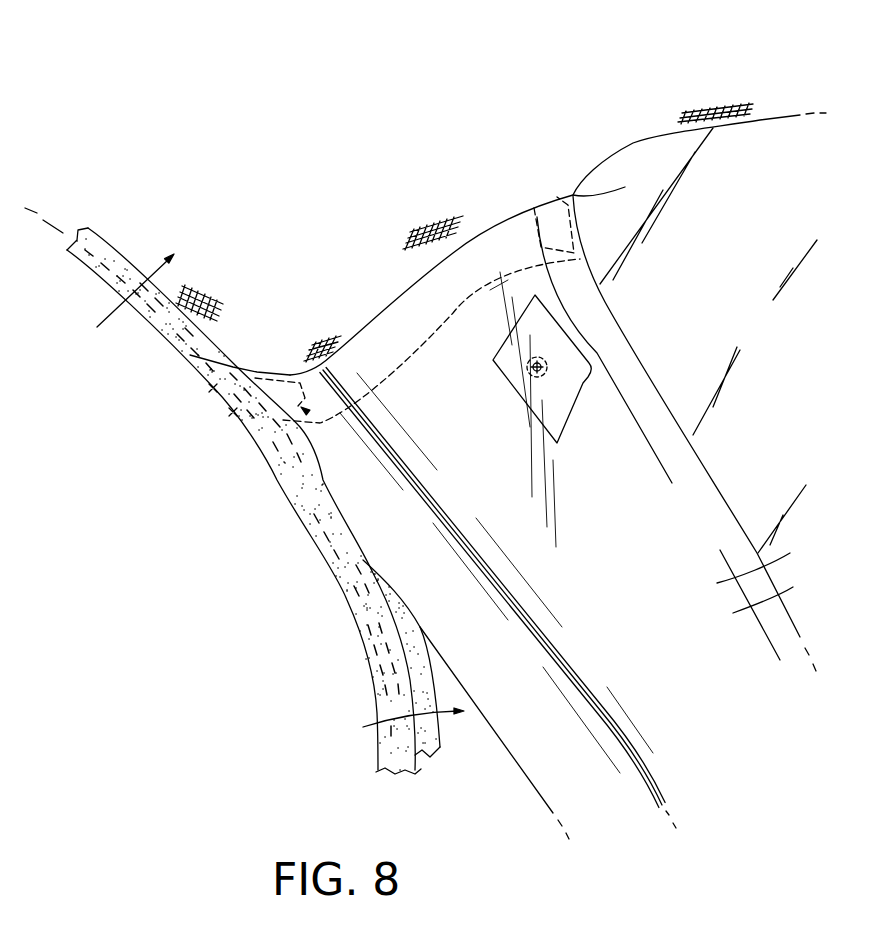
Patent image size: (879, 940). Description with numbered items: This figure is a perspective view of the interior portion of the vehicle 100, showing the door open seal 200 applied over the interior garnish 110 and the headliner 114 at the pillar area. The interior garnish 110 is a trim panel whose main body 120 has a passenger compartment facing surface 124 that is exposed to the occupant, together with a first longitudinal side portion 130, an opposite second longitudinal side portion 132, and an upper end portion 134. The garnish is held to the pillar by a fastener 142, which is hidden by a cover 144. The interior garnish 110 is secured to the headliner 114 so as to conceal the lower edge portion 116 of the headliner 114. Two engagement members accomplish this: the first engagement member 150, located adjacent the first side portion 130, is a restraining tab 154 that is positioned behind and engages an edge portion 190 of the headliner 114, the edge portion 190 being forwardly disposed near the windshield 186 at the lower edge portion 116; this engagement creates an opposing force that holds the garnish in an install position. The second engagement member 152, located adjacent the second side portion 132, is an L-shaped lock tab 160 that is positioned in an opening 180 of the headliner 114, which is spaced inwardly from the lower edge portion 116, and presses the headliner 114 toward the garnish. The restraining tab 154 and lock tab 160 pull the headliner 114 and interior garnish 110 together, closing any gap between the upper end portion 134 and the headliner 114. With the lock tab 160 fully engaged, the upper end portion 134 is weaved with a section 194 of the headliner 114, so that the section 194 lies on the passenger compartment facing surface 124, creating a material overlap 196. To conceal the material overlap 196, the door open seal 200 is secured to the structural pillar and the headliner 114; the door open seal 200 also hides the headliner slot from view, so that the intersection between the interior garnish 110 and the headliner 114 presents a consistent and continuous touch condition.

The vehicle 100 is at (603, 68).
The interior garnish 110 is at (712, 438).
The headliner 114 is at (223, 491).
The lower edge portion 116 is at (418, 352).
The main body 120 is at (785, 593).
The passenger compartment facing surface 124 is at (776, 555).
The first longitudinal side portion 130 is at (717, 487).
The second longitudinal side portion 132 is at (513, 752).
The upper end portion 134 is at (402, 297).
The fastener 142 is at (548, 356).
The cover 144 is at (583, 383).
The first engagement member 150 is at (537, 213).
The second engagement member 152 is at (320, 423).
The restraining tab 154 is at (553, 200).
The lock tab 160 is at (297, 370).
The opening 180 is at (256, 363).
The windshield 186 is at (722, 259).
The edge portion 190 is at (617, 176).
The section 194 is at (210, 392).
The material overlap 196 is at (230, 414).
The door open seal 200 is at (355, 598).